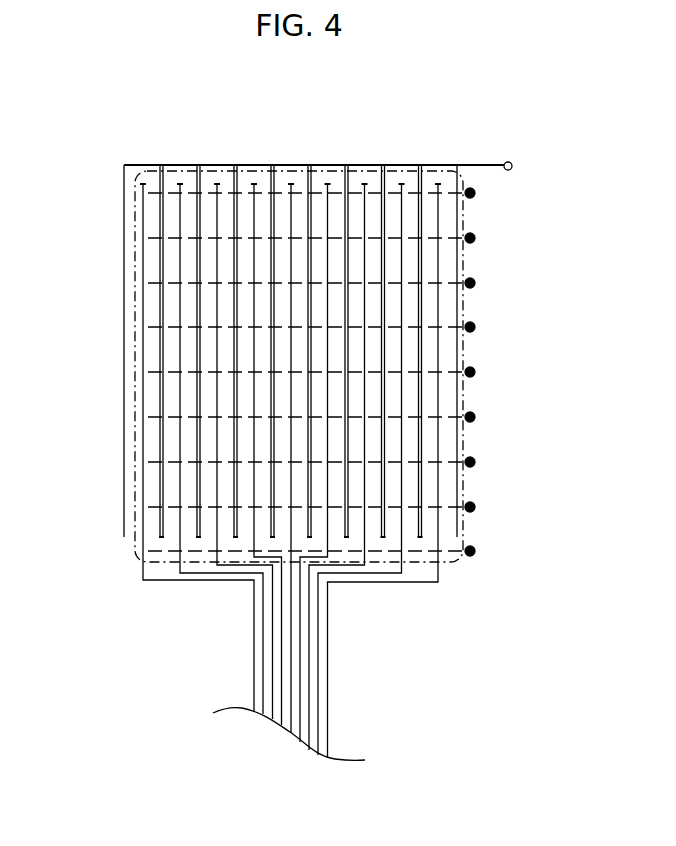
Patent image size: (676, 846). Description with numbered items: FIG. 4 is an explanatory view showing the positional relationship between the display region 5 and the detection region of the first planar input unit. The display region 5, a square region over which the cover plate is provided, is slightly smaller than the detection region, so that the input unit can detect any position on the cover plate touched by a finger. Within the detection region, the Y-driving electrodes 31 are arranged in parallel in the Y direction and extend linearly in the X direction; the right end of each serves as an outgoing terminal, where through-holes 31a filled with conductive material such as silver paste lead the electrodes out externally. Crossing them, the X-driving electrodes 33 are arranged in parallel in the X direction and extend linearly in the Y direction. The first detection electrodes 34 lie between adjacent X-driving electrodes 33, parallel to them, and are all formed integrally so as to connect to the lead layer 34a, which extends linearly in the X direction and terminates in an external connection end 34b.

The display region 5 is at (137, 282).
The Y-driving electrodes 31 is at (412, 370).
The through-holes 31a is at (476, 418).
The X-driving electrodes 33 is at (217, 398).
The first detection electrodes 34 is at (193, 214).
The lead layer 34a is at (338, 165).
The external connection end 34b is at (508, 161).